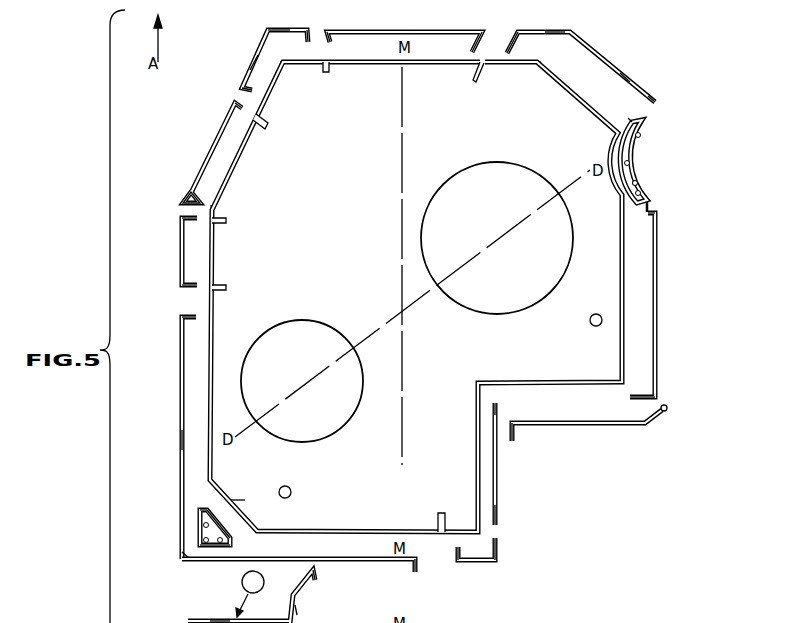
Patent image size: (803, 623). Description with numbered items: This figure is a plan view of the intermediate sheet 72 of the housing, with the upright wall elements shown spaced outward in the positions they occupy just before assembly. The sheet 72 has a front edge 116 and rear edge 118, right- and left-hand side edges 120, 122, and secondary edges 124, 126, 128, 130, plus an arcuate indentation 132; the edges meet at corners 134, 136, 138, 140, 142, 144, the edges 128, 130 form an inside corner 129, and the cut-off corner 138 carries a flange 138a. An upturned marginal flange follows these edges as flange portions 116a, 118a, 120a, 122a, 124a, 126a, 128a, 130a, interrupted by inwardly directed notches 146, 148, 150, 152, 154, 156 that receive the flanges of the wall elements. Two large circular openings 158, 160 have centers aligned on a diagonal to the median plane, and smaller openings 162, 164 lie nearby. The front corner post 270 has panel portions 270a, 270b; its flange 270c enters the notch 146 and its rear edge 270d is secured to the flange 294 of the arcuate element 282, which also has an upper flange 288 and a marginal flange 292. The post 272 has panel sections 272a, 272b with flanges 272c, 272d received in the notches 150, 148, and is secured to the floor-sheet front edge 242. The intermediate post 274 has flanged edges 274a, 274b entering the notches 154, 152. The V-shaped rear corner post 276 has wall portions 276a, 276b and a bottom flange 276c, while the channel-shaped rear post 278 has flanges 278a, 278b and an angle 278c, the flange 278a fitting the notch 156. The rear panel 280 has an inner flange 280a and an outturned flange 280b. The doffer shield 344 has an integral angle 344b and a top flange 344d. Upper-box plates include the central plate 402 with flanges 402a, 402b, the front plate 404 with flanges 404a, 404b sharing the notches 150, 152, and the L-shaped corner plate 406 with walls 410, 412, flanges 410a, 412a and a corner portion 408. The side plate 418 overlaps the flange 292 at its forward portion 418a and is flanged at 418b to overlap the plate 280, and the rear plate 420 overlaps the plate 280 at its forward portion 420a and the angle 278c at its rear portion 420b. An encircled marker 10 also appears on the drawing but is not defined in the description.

The assembly 10 is at (250, 594).
The intermediate sheet 72 is at (430, 138).
The front edge 116 is at (383, 62).
The flange portion 116a is at (379, 64).
The rear edge 118 is at (348, 534).
The flange portion 118a is at (342, 529).
The right-hand fore-and-aft outer side edge 120 is at (620, 256).
The flange portion 120a is at (620, 233).
The left-hand fore-and-aft outer side edge 122 is at (214, 303).
The flange portion 122a is at (213, 328).
The secondary edge 124 is at (575, 96).
The flange portion 124a is at (561, 83).
The secondary edge 126 is at (267, 101).
The flange portion 126a is at (274, 82).
The secondary edge 128 is at (552, 381).
The flange portion 128a is at (505, 381).
The inside corner 129 is at (477, 383).
The secondary edge 130 is at (476, 427).
The flange portion 130a is at (476, 455).
The arcuate indentation 132 is at (614, 185).
The corner 134 is at (552, 51).
The corner 136 is at (282, 50).
The corner 138 is at (228, 498).
The flange 138a is at (243, 499).
The corner 140 is at (620, 381).
The corner 142 is at (483, 533).
The corner 144 is at (214, 211).
The notch 146 is at (474, 83).
The notch 148 is at (327, 73).
The notch 150 is at (267, 127).
The notch 152 is at (226, 220).
The notch 154 is at (227, 287).
The notch 156 is at (440, 517).
The right-hand circular opening 158 is at (489, 162).
The left-hand circular opening 160 is at (309, 320).
The right-hand smaller opening 162 is at (598, 314).
The left-hand smaller opening 164 is at (289, 488).
The transverse front edge 242 is at (312, 606).
The front corner column or post 270 is at (605, 57).
The upright panel portion 270a is at (626, 76).
The upright panel portion 270b is at (556, 31).
The upright marginal edge flange 270c is at (509, 45).
The rear edge 270d is at (655, 100).
The upright column or post 272 is at (261, 44).
The panel section 272a is at (253, 62).
The panel section 272b is at (266, 30).
The flange 272c is at (243, 90).
The flange 272d is at (306, 40).
The left-hand intermediate post or column 274 is at (181, 248).
The flanged edge 274a is at (192, 286).
The flanged edge 274b is at (193, 218).
The left-hand rear corner post 276 is at (199, 525).
The wall portion 276a is at (199, 516).
The wall portion 276b is at (230, 532).
The bottom flange 276c is at (205, 535).
The right-hand rear corner post 278 is at (479, 562).
The upright marginal flange 278a is at (458, 550).
The upright marginal flange 278b is at (498, 552).
The upright angle 278c is at (498, 540).
The upright wall or panel 280 is at (613, 426).
The inner flange 280a is at (515, 436).
The outturned flange 280b is at (666, 411).
The arcuate upright element 282 is at (640, 188).
The upper end flange 288 is at (637, 150).
The upright marginal edge flange 292 is at (651, 205).
The upright marginal edge flange 294 is at (634, 124).
The doffer shield or wall element 344 is at (180, 620).
The integral angle 344b is at (317, 572).
The top flange 344d is at (220, 622).
The central upper plate 402 is at (410, 31).
The rearwardly directed flange 402a is at (473, 44).
The rearwardly directed flange 402b is at (349, 25).
The left-hand front plate 404 is at (214, 139).
The front upright marginal flange 404a is at (232, 109).
The rear upright marginal flange 404b is at (192, 191).
The left-hand rear corner plate 406 is at (181, 440).
The corner portion 408 is at (182, 562).
The left-hand wall 410 is at (181, 398).
The flange 410a is at (192, 318).
The rear wall 412 is at (227, 563).
The marginal flange 412a is at (421, 557).
The side plate 418 is at (657, 292).
The forward portion 418a is at (657, 214).
The rear flange 418b is at (656, 395).
The fore-and-aft rear plate 420 is at (498, 491).
The forward portion 420a is at (493, 407).
The rear portion 420b is at (498, 513).